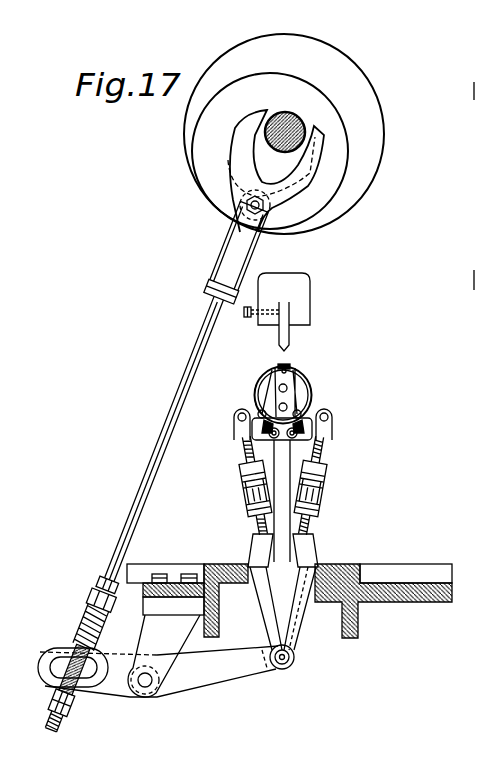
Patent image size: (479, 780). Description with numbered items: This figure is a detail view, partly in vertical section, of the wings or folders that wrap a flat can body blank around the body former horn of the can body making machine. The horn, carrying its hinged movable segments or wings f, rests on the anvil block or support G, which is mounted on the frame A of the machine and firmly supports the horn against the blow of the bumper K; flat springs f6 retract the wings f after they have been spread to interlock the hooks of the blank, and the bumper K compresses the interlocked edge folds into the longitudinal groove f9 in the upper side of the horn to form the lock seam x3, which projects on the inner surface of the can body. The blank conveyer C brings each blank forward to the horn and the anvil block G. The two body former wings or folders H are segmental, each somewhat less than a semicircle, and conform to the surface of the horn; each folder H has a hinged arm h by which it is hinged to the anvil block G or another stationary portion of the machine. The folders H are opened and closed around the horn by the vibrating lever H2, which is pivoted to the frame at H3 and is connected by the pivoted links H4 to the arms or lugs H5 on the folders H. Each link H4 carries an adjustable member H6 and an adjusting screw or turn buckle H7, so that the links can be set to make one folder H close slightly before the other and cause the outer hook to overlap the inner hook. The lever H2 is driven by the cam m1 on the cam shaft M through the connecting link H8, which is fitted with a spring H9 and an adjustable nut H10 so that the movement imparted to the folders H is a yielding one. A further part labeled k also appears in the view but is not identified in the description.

The cam shaft M is at (305, 127).
The cam m1 is at (352, 202).
The movable segments or wings of the horn f is at (262, 380).
The flat springs f6 is at (291, 336).
The longitudinal groove f9 is at (280, 368).
The bumper K is at (311, 316).
The lock seam x3 is at (286, 369).
The body former wings or folders H is at (313, 387).
The vibrating lever H2 is at (213, 678).
The pivot of the vibrating lever H3 is at (145, 683).
The pivoted links H4 is at (340, 535).
The arms or lugs H5 is at (347, 397).
The adjustable member H6 is at (342, 491).
The adjusting screw or turn buckle H7 is at (324, 486).
The connecting link H8 is at (53, 637).
The spring H9 is at (85, 612).
The adjustable nut H10 is at (98, 581).
The blank conveyer C is at (257, 428).
The anvil block or support G is at (276, 444).
The stem k is at (291, 440).
The hinged arm h is at (309, 443).
The frame A is at (375, 602).